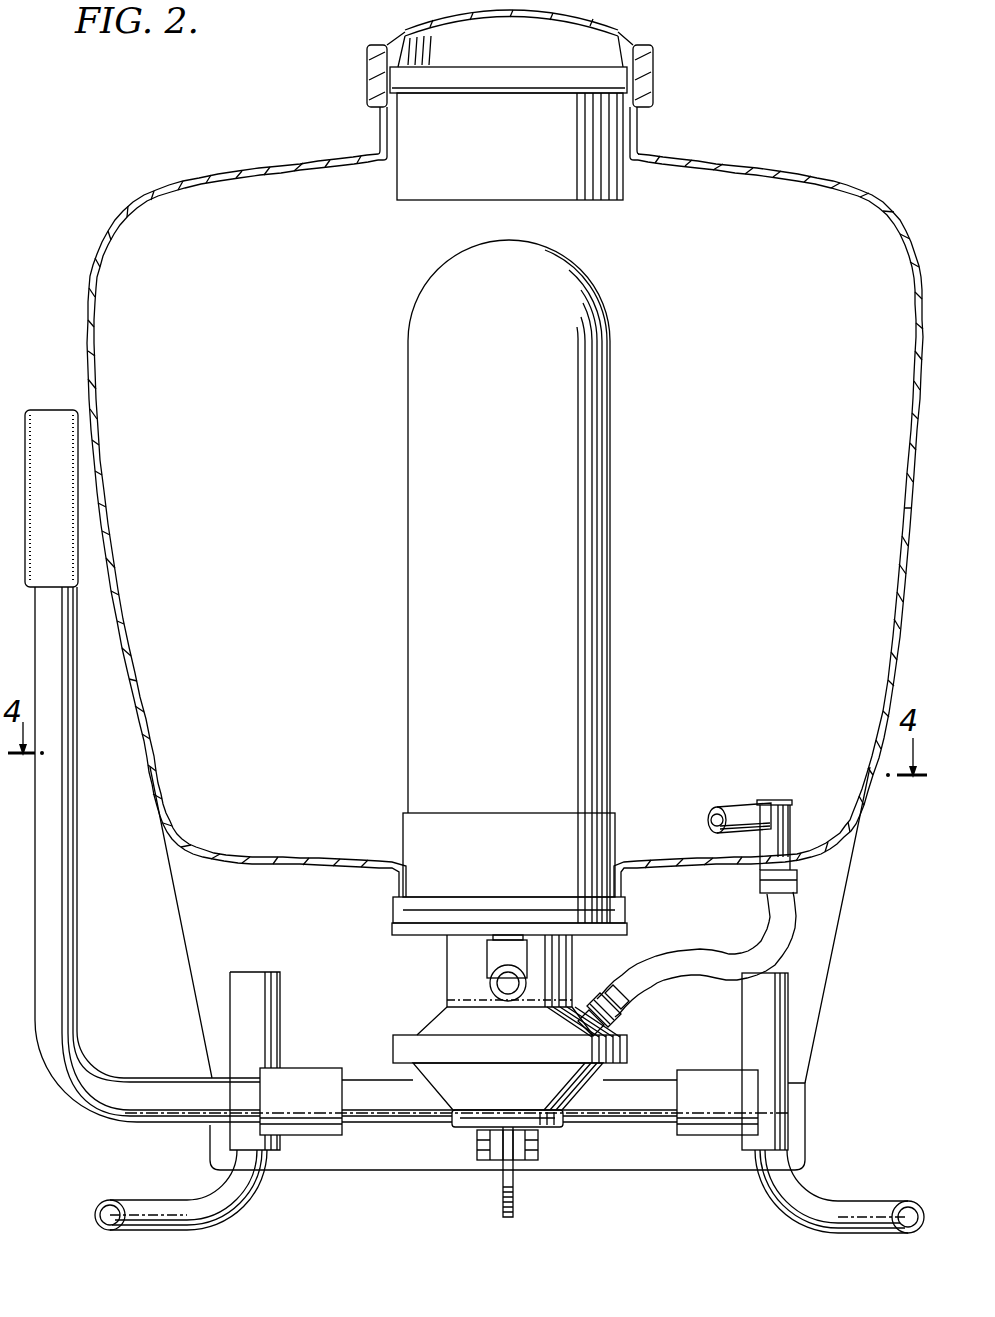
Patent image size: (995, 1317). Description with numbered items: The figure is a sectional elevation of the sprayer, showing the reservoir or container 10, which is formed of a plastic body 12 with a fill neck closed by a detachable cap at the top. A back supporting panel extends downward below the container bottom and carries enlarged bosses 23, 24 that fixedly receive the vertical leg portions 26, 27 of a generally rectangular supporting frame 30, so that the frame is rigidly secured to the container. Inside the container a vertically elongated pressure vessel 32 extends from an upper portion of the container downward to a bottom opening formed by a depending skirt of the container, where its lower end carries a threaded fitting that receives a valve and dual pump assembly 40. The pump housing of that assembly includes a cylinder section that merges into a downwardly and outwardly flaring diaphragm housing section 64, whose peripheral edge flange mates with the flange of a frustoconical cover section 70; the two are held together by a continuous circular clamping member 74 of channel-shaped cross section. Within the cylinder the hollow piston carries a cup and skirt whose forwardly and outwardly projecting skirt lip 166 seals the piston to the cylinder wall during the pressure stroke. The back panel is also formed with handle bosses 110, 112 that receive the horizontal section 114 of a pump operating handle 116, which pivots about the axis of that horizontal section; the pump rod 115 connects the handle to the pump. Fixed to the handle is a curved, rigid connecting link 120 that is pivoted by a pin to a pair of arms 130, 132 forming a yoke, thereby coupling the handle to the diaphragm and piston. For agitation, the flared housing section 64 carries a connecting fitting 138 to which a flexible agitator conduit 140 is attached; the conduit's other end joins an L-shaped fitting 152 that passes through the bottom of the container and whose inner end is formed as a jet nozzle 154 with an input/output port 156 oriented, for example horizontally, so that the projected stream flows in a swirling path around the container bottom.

The container 10 is at (505, 546).
The plastic body 12 is at (862, 810).
The enlarged boss 23 is at (240, 1140).
The enlarged boss 24 is at (788, 1136).
The vertical leg portion 26 is at (283, 1153).
The vertical leg portion 27 is at (757, 1160).
The supporting frame 30 is at (162, 1230).
The pressure vessel 32 is at (611, 487).
The valve and dual pump assembly 40 is at (510, 971).
The diaphragm housing section 64 is at (445, 1018).
The frustoconical cover section 70 is at (440, 1090).
The clamping member 74 is at (395, 1042).
The handle boss 110 is at (297, 1075).
The handle boss 112 is at (716, 1072).
The horizontal section 114 is at (395, 1120).
The pump handle grip 115 is at (70, 815).
The pump operating handle 116 is at (106, 1128).
The connecting link 120 is at (515, 1193).
The arm 130 is at (480, 1148).
The arm 132 is at (538, 1150).
The connecting fitting 138 is at (612, 1022).
The flexible agitator conduit 140 is at (722, 948).
The outlet fitting 152 is at (760, 872).
The jet nozzle 154 is at (712, 802).
The input/output port 156 is at (745, 790).
The skirt lip 166 is at (490, 983).